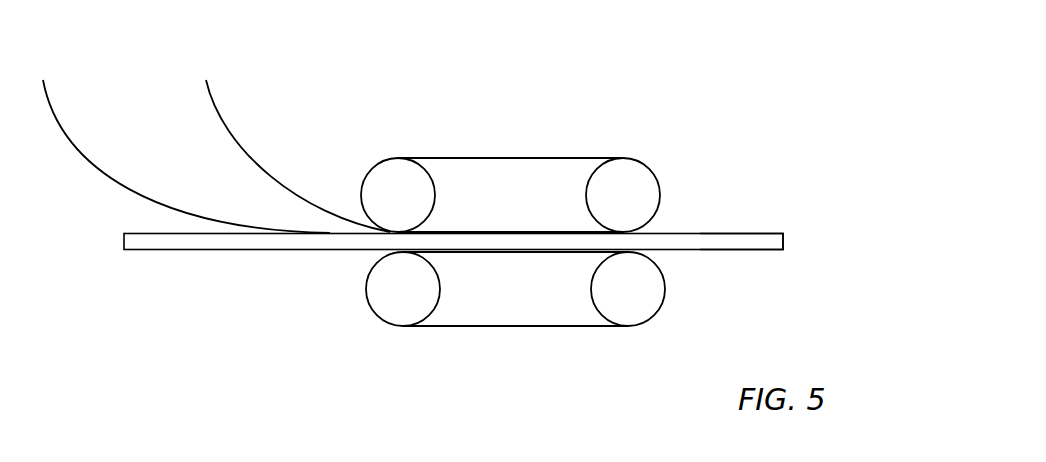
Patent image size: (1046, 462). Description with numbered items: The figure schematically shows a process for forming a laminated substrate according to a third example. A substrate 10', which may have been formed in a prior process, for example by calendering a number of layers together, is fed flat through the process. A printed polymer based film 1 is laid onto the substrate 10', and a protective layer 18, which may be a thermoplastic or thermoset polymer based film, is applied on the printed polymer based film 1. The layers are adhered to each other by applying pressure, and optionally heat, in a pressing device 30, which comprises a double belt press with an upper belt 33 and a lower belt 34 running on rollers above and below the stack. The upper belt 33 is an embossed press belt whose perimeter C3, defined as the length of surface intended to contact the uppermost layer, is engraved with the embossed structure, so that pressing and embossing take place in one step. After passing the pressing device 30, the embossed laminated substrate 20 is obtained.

The printed polymer based film 1 is at (55, 112).
The protective layer 18 is at (237, 142).
The substrate 10' is at (453, 281).
The laminated substrate 20 is at (750, 255).
The pressing device 30 is at (488, 152).
The upper belt 33 is at (552, 153).
The perimeter C3 is at (452, 157).
The lower belt 34 is at (590, 328).